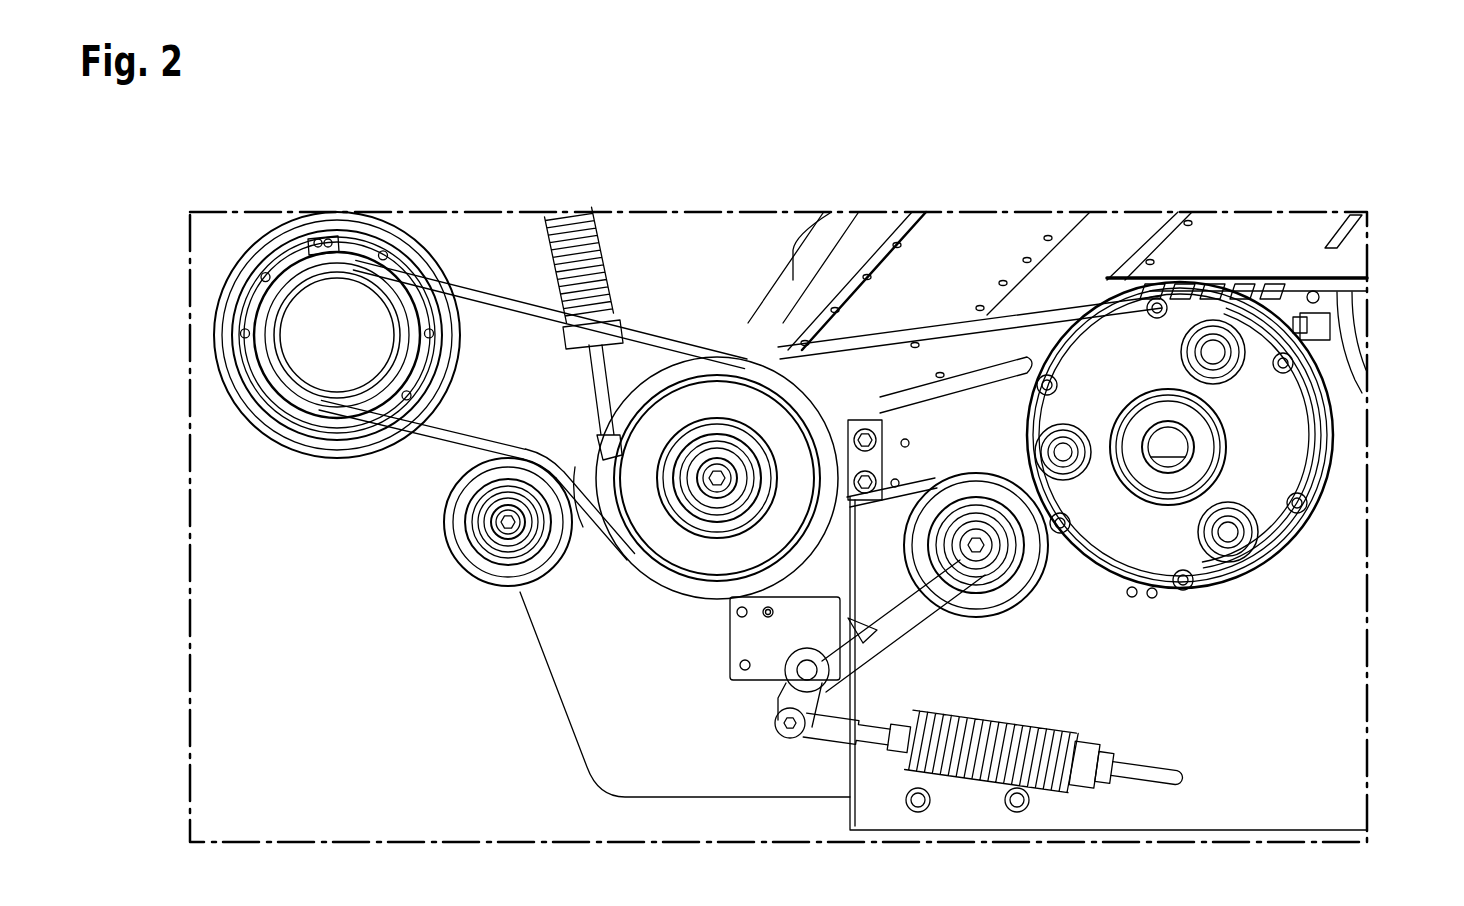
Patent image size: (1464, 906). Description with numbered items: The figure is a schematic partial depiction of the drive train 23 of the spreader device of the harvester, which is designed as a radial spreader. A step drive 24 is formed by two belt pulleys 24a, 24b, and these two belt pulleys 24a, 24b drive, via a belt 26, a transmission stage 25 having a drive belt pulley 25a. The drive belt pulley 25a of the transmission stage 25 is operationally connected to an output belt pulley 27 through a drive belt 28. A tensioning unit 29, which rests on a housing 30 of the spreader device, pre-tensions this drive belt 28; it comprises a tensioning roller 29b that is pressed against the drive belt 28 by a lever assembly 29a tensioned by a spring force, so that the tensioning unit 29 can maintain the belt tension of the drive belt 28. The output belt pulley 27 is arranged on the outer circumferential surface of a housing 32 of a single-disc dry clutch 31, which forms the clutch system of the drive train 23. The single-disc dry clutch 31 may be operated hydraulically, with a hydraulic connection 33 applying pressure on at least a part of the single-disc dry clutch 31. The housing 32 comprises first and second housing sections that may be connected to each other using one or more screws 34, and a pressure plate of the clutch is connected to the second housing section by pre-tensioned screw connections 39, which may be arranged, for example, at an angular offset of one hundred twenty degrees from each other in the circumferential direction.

The drive train 23 is at (703, 258).
The step drive 24 is at (213, 307).
The belt pulley 24a is at (253, 250).
The belt pulley 24b is at (370, 268).
The transmission stage 25 is at (618, 571).
The drive belt pulley 25a is at (593, 447).
The belt 26 is at (493, 293).
The output belt pulley 27 is at (1258, 280).
The drive belt 28 is at (963, 317).
The tensioning unit 29 is at (963, 794).
The lever assembly 29a is at (862, 660).
The tensioning roller 29b is at (990, 600).
The housing 30 is at (1298, 797).
The single-disc dry clutch 31 is at (1300, 548).
The housing 32 is at (1300, 440).
The hydraulic connection 33 is at (1168, 440).
The screws 34 is at (1300, 366).
The screw connections 39 is at (1068, 430).